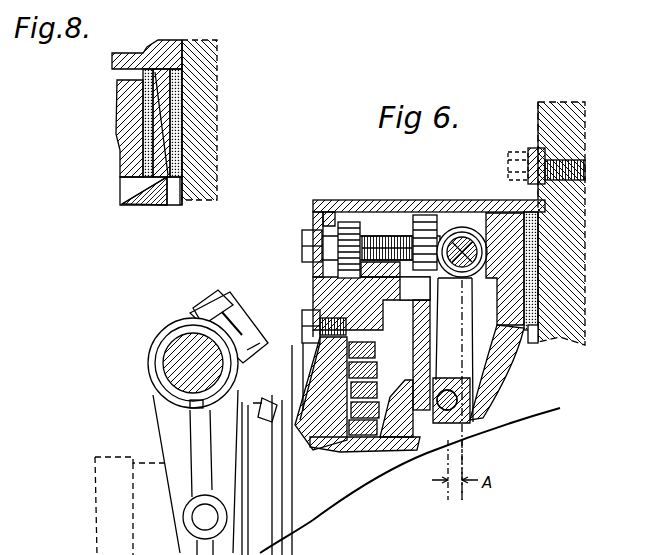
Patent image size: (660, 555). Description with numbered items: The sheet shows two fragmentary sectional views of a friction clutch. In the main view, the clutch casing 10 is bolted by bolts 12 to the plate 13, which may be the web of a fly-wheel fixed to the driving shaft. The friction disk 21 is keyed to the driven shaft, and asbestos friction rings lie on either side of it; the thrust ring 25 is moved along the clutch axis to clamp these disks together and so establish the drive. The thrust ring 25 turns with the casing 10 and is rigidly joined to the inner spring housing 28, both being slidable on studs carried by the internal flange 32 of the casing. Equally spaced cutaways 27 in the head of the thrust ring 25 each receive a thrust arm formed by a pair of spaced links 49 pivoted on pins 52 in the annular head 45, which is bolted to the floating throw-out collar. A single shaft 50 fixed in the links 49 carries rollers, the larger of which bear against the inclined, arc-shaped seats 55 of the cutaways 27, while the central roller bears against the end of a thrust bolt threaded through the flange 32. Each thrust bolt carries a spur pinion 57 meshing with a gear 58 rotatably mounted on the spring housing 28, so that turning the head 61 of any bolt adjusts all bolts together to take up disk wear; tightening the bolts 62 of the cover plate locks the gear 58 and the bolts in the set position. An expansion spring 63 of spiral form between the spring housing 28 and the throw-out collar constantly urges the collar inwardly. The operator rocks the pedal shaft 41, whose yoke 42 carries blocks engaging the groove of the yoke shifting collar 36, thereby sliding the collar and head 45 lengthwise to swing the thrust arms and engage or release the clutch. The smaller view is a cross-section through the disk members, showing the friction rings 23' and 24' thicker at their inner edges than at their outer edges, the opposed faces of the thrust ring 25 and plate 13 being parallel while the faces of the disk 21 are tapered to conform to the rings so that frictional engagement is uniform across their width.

In FIG. 8, the cylindrical casing 10 is at (147, 45).
In FIG. 6, the cylindrical casing 10 is at (388, 212).
In FIG. 6, the bolts 12 is at (515, 152).
In FIG. 8, the plate 13 is at (218, 70).
In FIG. 6, the plate 13 is at (585, 210).
In FIG. 8, the friction disk 21 is at (160, 118).
In FIG. 6, the friction disk 21 is at (533, 276).
In FIG. 8, the friction ring 23' is at (110, 123).
In FIG. 8, the friction ring 24' is at (216, 123).
In FIG. 8, the thrust ring 25 is at (122, 100).
In FIG. 6, the thrust ring 25 is at (490, 220).
In FIG. 6, the cutaways 27 is at (467, 350).
In FIG. 6, the spring housing 28 is at (322, 385).
In FIG. 6, the internal flange 32 is at (352, 222).
In FIG. 6, the yoke shifting collar 36 is at (195, 544).
In FIG. 6, the pedal shaft 41 is at (190, 358).
In FIG. 6, the yoke 42 is at (170, 426).
In FIG. 6, the annular head 45 is at (416, 364).
In FIG. 6, the links 49 is at (452, 390).
In FIG. 6, the shaft 50 is at (460, 235).
In FIG. 6, the pins 52 is at (475, 420).
In FIG. 6, the seats 55 is at (477, 258).
In FIG. 6, the spur pinion 57 is at (342, 218).
In FIG. 6, the gear 58 is at (345, 284).
In FIG. 6, the head 61 is at (302, 244).
In FIG. 6, the bolts 62 is at (302, 326).
In FIG. 6, the expansion spring 63 is at (370, 448).